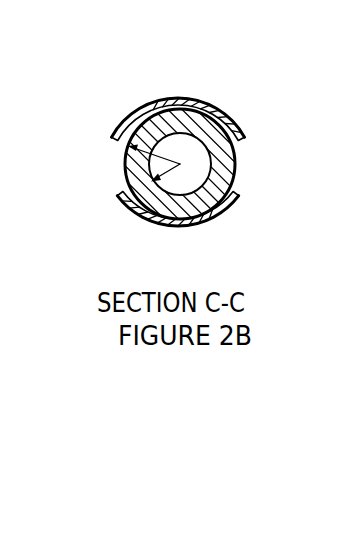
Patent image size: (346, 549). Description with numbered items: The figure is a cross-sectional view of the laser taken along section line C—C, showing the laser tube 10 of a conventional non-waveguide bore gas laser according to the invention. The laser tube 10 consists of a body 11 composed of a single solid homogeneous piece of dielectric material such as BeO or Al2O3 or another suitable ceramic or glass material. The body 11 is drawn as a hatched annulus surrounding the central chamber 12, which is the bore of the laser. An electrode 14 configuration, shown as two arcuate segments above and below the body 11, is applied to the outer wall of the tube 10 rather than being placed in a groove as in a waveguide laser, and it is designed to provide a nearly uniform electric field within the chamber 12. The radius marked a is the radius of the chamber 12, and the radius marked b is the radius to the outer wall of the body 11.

The laser tube 10 is at (198, 163).
The body 11 is at (179, 163).
The chamber 12 is at (223, 159).
The electrode 14 is at (178, 159).